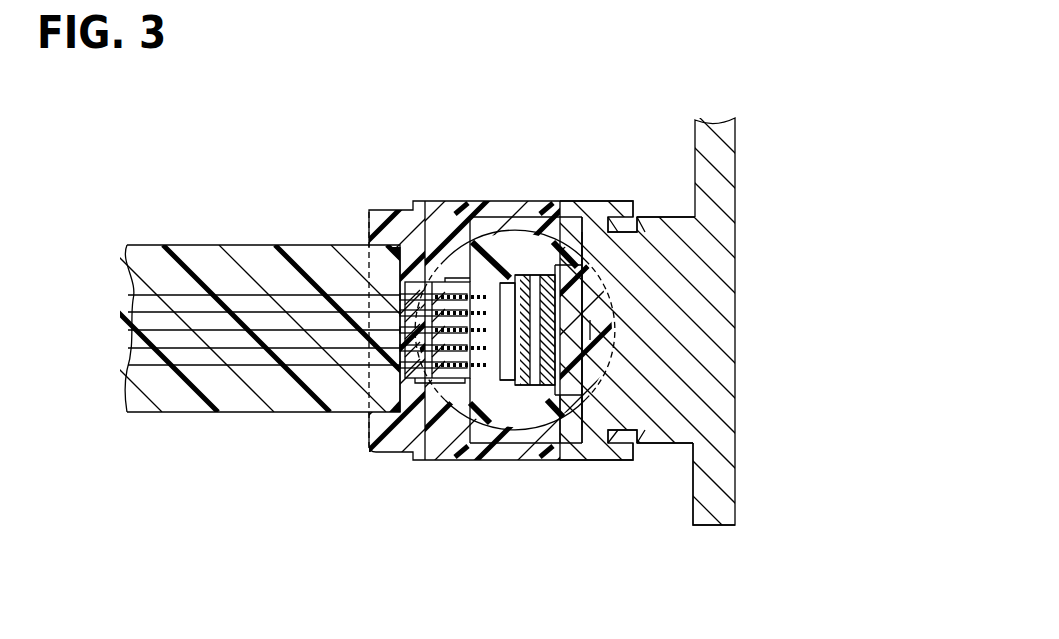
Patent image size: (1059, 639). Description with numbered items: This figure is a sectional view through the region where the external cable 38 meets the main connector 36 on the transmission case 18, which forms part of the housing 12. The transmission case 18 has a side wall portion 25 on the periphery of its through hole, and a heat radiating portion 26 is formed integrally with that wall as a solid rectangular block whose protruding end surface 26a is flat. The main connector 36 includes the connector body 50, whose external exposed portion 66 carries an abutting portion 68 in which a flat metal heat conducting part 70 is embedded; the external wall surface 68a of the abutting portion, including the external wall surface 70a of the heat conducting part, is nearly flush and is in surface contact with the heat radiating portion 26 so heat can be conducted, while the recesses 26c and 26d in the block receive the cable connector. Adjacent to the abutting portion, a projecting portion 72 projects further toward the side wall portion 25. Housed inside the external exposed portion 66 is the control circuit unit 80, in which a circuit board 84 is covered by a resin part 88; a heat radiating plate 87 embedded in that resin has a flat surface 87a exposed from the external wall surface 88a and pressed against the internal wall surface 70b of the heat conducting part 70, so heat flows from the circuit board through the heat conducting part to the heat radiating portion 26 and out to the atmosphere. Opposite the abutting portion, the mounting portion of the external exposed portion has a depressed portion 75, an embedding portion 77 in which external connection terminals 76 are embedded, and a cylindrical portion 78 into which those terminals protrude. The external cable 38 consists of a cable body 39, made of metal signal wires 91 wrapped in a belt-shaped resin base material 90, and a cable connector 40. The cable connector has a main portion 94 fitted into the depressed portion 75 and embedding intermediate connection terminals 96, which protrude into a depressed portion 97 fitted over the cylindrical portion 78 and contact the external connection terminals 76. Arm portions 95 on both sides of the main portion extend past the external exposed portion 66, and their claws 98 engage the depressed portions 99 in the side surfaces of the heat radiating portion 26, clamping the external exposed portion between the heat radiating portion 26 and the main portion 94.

The housing 12 is at (778, 46).
The transmission case 18 is at (728, 128).
The side wall portion 25 is at (722, 490).
The heat radiating portion 26 is at (668, 230).
The protruding end surface 26a is at (598, 302).
The side surface 26c is at (645, 446).
The upper groove 26d is at (617, 214).
The main connector 36 is at (875, 309).
The external cable 38 is at (258, 108).
The cable body 39 is at (264, 238).
The cable connector 40 is at (362, 207).
The connector body 50 is at (620, 328).
The external exposed portion 66 is at (513, 438).
The abutting portion 68 is at (575, 250).
The external wall surface 68a is at (592, 283).
The heat conducting part 70 is at (580, 240).
The external wall surface 70a is at (585, 343).
The internal wall surface 70b is at (508, 395).
The projecting portion 72 is at (590, 380).
The depressed portion 75 is at (447, 385).
The external connection terminals 76 is at (440, 296).
The embedding portion 77 is at (474, 395).
The cylindrical portion 78 is at (425, 375).
The control circuit unit 80 is at (570, 360).
The circuit board 84 is at (522, 283).
The heat radiating plate 87 is at (553, 275).
The flat surface 87a is at (565, 395).
The resin part 88 is at (502, 283).
The external wall surface 88a is at (530, 400).
The base material 90 is at (131, 414).
The signal wires 91 is at (124, 264).
The main portion 94 is at (372, 430).
The arm portions 95 is at (470, 230).
The intermediate connection terminals 96 is at (418, 282).
The depressed portion 97 is at (437, 380).
The claws 98 is at (618, 228).
The depressed portions 99 is at (640, 238).